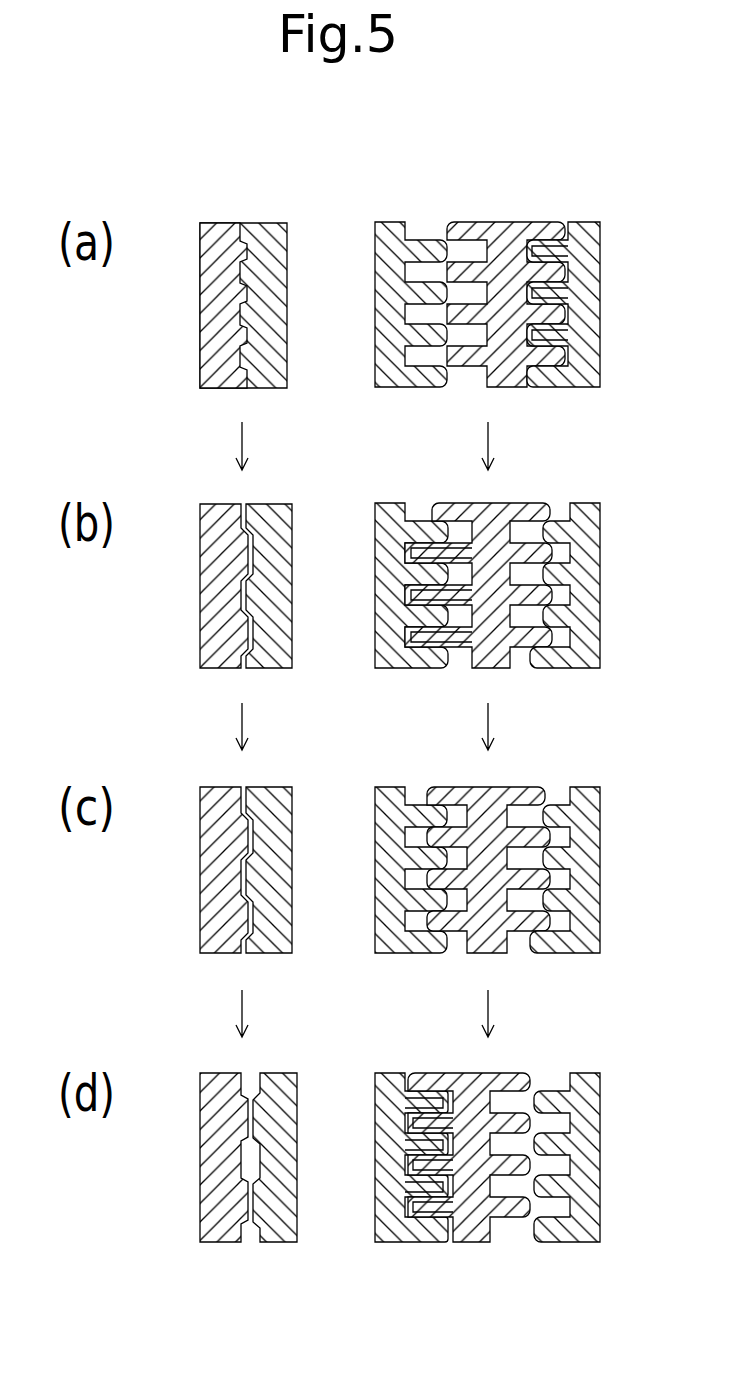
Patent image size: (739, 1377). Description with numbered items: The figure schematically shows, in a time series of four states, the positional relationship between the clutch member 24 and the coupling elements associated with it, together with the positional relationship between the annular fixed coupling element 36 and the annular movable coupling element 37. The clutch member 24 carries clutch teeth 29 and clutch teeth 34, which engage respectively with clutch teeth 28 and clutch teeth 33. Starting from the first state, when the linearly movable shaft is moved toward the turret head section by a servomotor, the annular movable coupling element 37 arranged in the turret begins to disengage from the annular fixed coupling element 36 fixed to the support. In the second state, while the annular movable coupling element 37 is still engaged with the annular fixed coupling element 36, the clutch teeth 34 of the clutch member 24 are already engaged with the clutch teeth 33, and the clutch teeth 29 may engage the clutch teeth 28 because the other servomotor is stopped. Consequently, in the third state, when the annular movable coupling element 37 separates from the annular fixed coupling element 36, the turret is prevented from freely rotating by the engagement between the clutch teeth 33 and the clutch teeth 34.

The clutch member 24 is at (494, 239).
The clutch teeth 28 is at (585, 232).
The clutch teeth 29 is at (545, 232).
The clutch teeth 33 is at (391, 245).
The clutch teeth 34 is at (463, 228).
The annular fixed coupling element 36 is at (270, 248).
The annular movable coupling element 37 is at (218, 247).